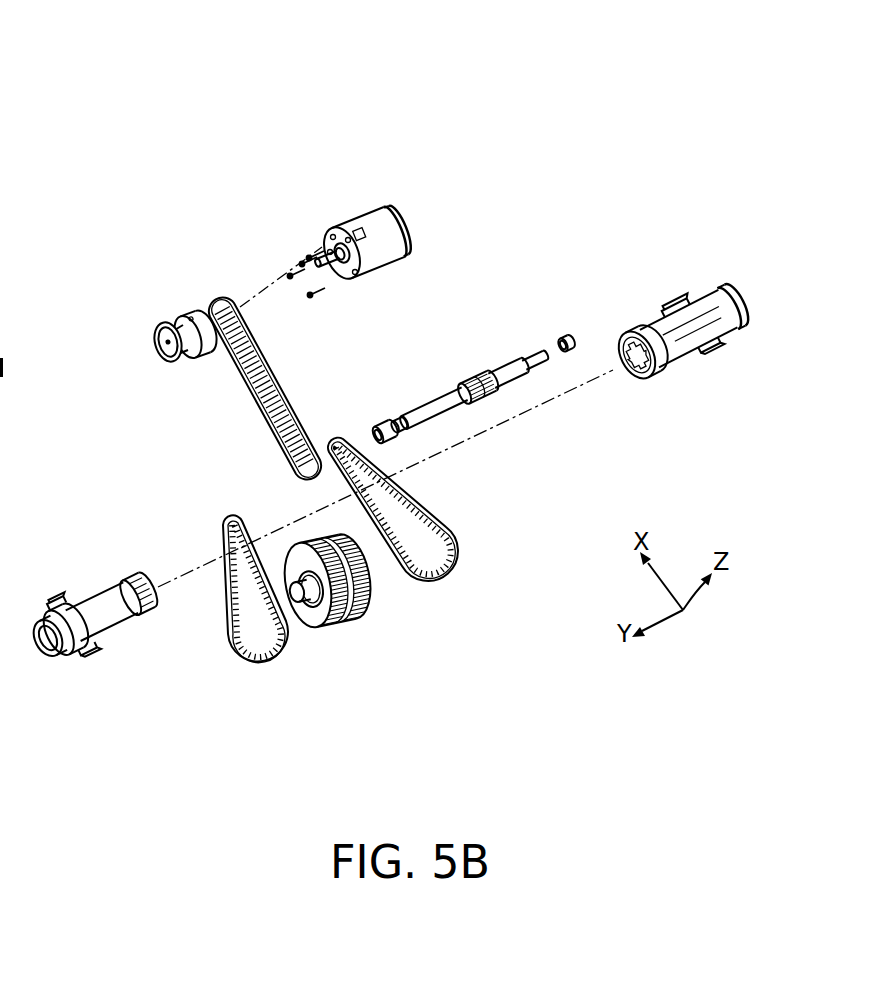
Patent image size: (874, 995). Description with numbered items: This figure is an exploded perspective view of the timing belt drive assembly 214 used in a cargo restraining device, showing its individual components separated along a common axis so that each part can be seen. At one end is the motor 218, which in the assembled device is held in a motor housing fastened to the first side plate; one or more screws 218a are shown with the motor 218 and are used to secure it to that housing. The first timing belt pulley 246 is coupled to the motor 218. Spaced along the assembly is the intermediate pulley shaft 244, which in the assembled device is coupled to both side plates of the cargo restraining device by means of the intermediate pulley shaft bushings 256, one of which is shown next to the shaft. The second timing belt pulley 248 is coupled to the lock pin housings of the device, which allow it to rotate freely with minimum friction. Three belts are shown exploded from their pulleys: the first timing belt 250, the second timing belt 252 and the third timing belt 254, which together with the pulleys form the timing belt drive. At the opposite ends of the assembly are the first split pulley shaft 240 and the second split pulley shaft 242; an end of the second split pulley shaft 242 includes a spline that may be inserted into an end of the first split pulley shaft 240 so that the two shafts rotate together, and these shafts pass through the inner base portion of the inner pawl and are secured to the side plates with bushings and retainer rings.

The timing belt drive assembly 214 is at (654, 134).
The motor 218 is at (370, 223).
The screws 218a is at (293, 257).
The first split pulley shaft 240 is at (752, 295).
The second split pulley shaft 242 is at (110, 625).
The intermediate pulley shaft 244 is at (517, 372).
The first timing belt pulley 246 is at (157, 361).
The second timing belt pulley 248 is at (365, 620).
The first timing belt 250 is at (280, 436).
The second timing belt 252 is at (453, 555).
The third timing belt 254 is at (260, 660).
The intermediate pulley shaft bushings 256 is at (562, 336).